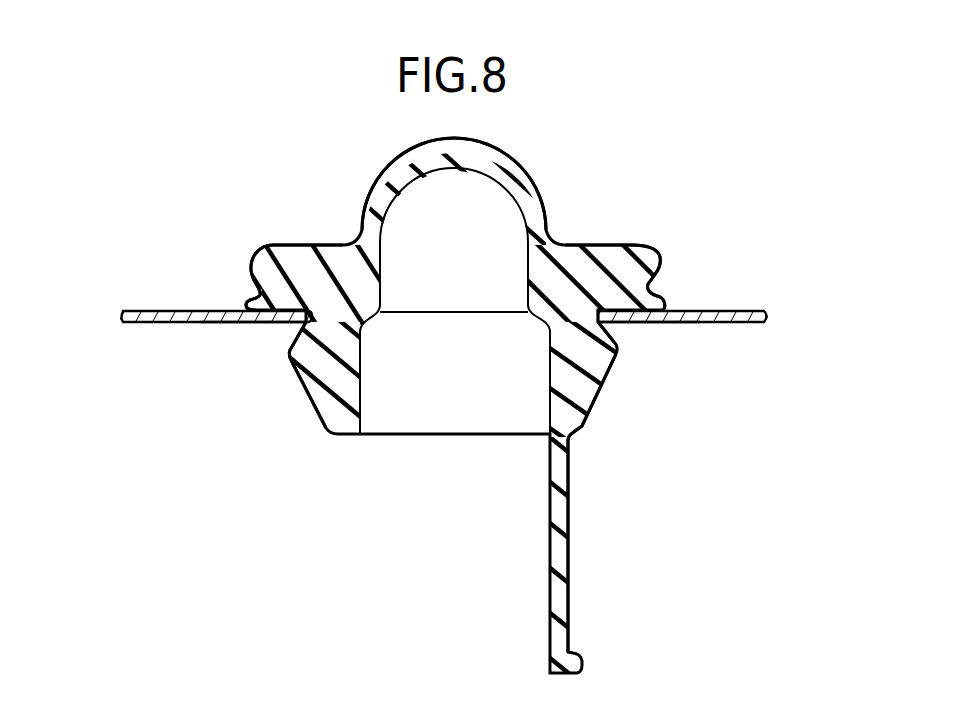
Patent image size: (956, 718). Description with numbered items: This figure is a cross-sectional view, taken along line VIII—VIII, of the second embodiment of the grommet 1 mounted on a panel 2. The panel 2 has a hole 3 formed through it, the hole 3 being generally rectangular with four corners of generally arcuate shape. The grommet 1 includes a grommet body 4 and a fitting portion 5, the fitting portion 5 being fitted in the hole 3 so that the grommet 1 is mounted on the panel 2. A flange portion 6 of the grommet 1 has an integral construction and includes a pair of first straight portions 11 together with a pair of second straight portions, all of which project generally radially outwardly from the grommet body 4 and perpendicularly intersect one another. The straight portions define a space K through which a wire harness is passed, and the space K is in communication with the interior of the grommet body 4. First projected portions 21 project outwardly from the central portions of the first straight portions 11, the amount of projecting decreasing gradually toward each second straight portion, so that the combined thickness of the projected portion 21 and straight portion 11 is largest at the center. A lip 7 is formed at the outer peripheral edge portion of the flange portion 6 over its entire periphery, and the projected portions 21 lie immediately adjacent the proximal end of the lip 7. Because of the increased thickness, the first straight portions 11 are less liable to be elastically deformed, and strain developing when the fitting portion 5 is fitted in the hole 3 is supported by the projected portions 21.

The grommet 1 is at (636, 185).
The panel 2 is at (722, 311).
The hole 3 is at (599, 332).
The grommet body 4 is at (505, 163).
The fitting portion 5 is at (603, 411).
The flange portion 6 is at (626, 252).
The lip 7 is at (238, 323).
The first straight portions 11 is at (297, 260).
The first projected portions 21 is at (253, 267).
The space K is at (478, 258).